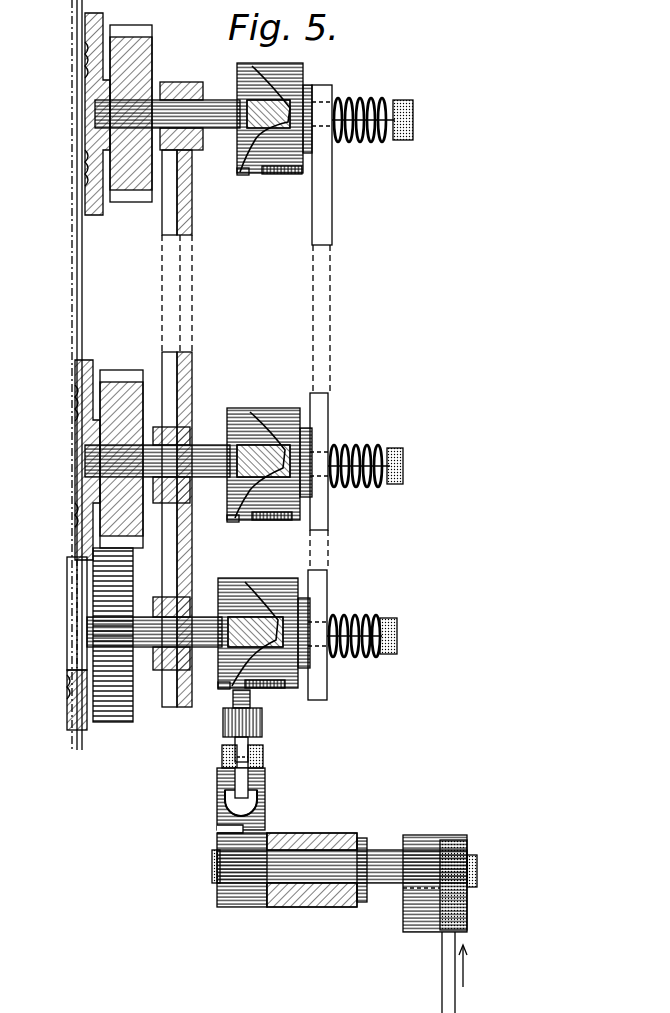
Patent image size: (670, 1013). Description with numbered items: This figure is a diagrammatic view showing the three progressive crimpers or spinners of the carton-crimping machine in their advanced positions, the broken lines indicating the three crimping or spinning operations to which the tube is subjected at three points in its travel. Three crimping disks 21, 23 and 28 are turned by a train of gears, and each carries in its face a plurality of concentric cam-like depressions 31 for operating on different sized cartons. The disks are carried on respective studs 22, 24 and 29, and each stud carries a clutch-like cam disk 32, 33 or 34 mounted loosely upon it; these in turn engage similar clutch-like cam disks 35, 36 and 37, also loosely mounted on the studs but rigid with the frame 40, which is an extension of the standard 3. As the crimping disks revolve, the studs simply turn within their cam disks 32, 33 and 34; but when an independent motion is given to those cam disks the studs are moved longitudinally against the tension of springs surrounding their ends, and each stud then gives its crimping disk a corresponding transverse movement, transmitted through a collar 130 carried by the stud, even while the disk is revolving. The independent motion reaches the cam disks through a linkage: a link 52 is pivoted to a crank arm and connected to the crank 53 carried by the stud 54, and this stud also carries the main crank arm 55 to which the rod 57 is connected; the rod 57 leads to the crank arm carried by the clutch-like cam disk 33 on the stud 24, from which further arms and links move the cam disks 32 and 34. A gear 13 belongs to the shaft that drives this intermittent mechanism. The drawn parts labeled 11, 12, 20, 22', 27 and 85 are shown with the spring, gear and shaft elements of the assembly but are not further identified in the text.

The standard 3 is at (193, 382).
The spring 11 is at (362, 620).
The spring 12 is at (370, 448).
The gear 13 is at (381, 142).
The gear 20 is at (110, 722).
The crimping disk 21 is at (67, 720).
The stud 22 is at (185, 619).
The gear 22' is at (122, 445).
The crimping disk 23 is at (76, 542).
The stud 24 is at (182, 430).
The gear 27 is at (128, 202).
The crimping disk 28 is at (84, 200).
The stud 29 is at (183, 110).
The concentric cam-like depressions 31 is at (76, 400).
The clutch-like cam disk 32 is at (232, 580).
The clutch-like cam disk 33 is at (246, 408).
The clutch-like cam disk 34 is at (243, 174).
The clutch-like cam disk 35 is at (282, 577).
The clutch-like cam disk 36 is at (280, 408).
The clutch-like cam disk 37 is at (288, 172).
The frame 40 is at (332, 215).
The link 52 is at (445, 958).
The crank 53 is at (404, 912).
The stud 54 is at (338, 850).
The main crank arm 55 is at (265, 812).
The rod 57 is at (251, 700).
The shaft 85 is at (95, 115).
The collar 130 is at (237, 95).